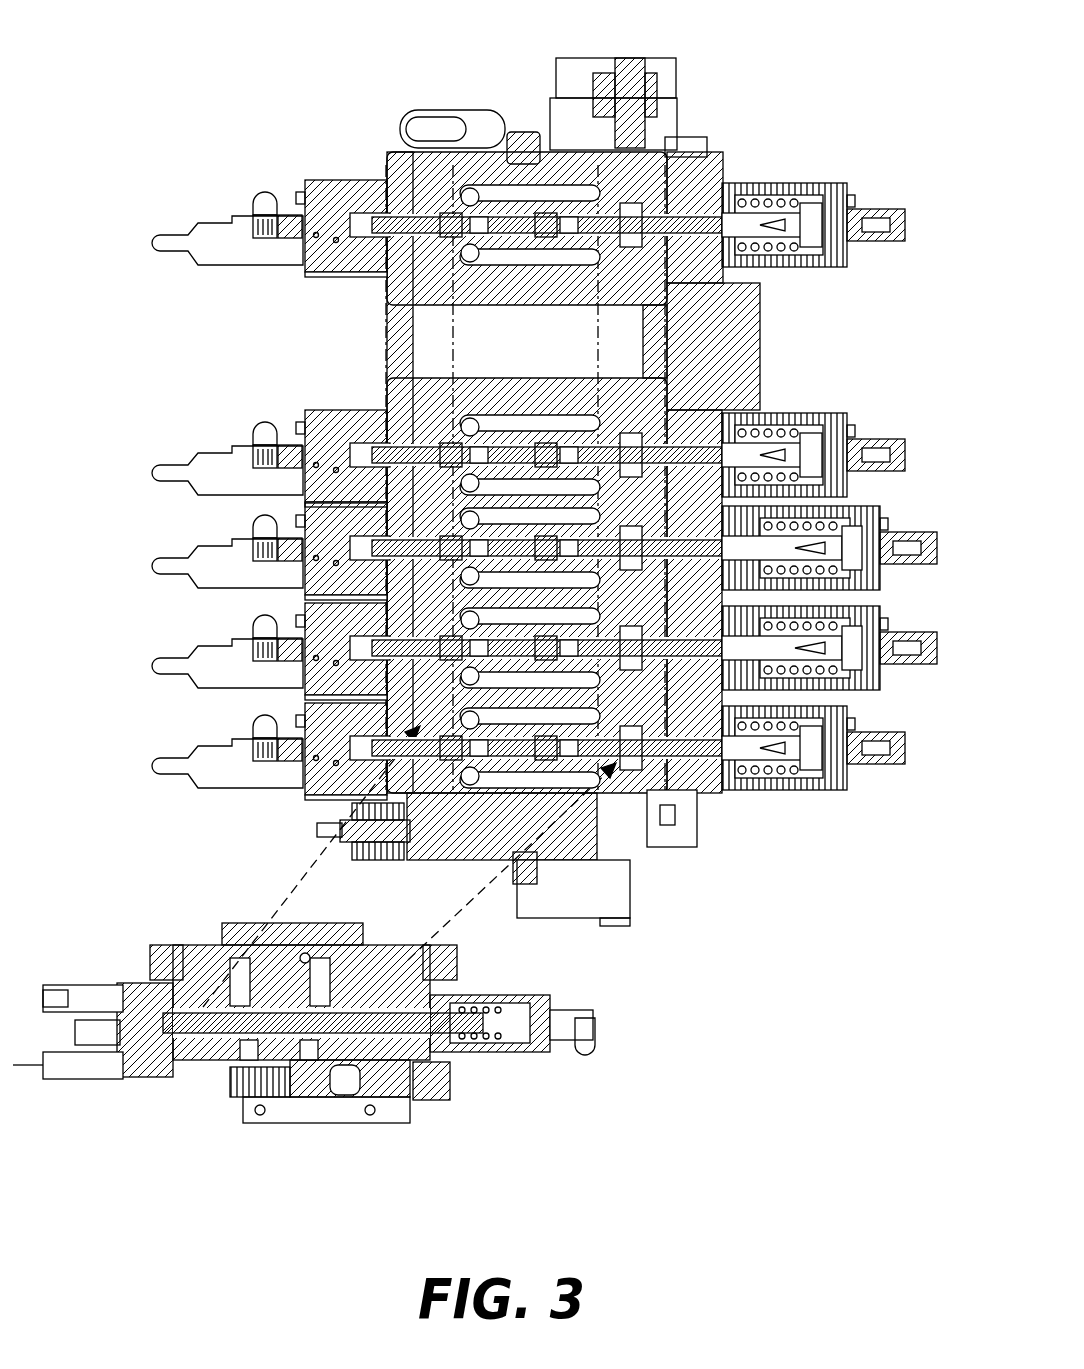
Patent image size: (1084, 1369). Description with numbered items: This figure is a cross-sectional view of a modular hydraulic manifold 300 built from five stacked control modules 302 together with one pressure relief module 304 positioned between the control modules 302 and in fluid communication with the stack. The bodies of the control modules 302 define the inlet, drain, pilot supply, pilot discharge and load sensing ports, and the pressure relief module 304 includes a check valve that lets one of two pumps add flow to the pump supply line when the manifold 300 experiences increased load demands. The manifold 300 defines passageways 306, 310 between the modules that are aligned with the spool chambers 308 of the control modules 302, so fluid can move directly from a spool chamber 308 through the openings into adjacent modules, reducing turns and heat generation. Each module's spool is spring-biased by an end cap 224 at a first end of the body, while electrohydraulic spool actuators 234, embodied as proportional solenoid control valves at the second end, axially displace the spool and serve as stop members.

The modular manifold 300 is at (882, 75).
The control module 302 is at (170, 183).
The pressure relief module 304 is at (298, 352).
The passageway 306 is at (430, 190).
The spool chamber 308 is at (397, 448).
The passageway 310 is at (425, 493).
The end cap 224 is at (357, 190).
The electrohydraulic spool actuator 234 is at (240, 217).